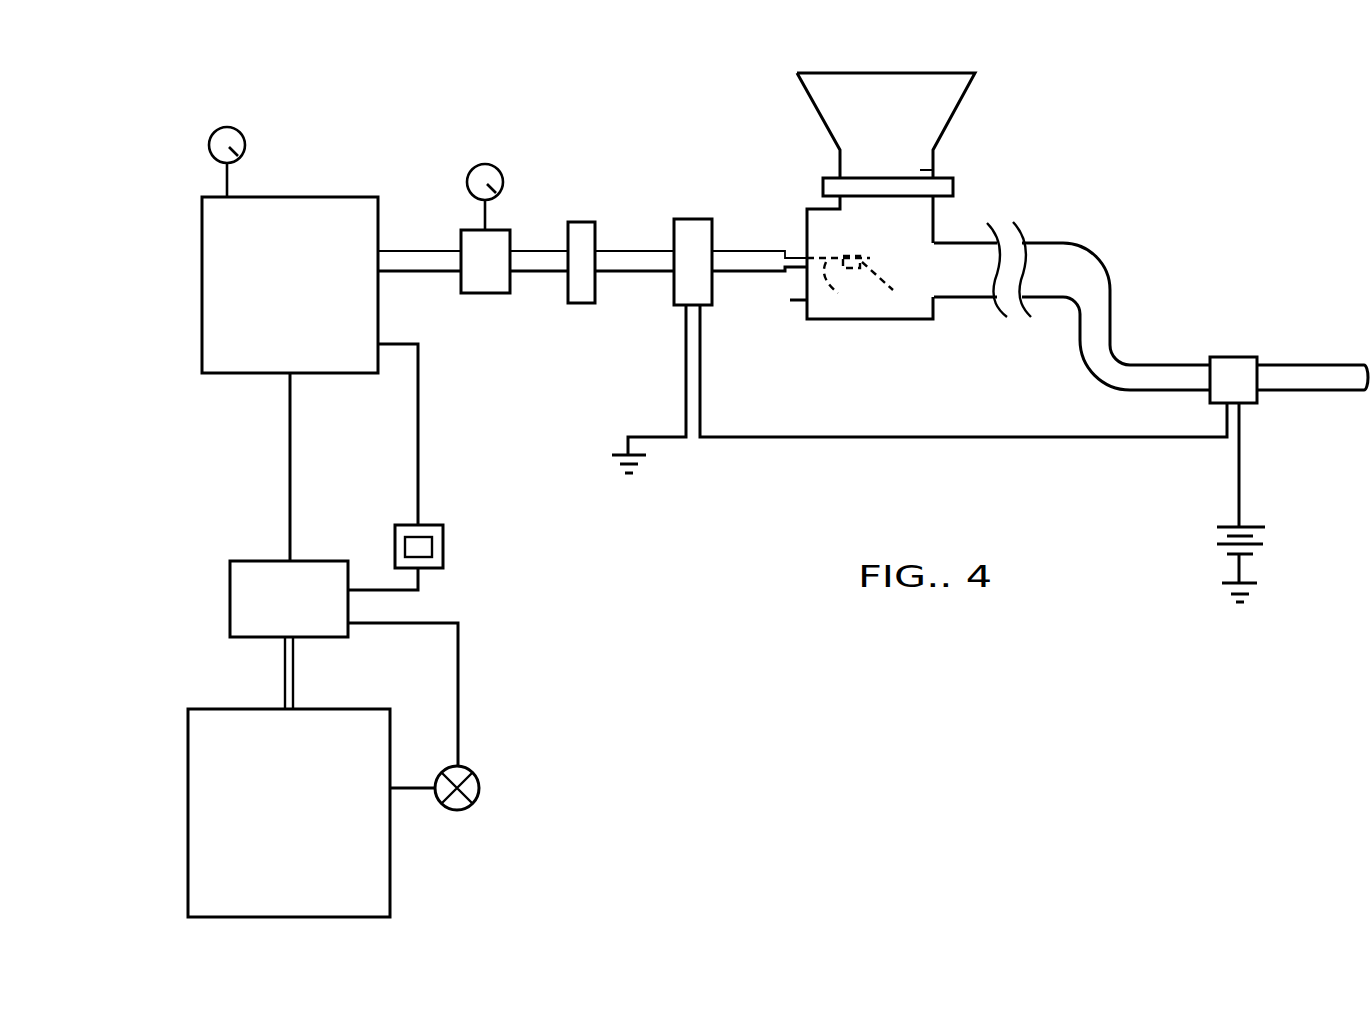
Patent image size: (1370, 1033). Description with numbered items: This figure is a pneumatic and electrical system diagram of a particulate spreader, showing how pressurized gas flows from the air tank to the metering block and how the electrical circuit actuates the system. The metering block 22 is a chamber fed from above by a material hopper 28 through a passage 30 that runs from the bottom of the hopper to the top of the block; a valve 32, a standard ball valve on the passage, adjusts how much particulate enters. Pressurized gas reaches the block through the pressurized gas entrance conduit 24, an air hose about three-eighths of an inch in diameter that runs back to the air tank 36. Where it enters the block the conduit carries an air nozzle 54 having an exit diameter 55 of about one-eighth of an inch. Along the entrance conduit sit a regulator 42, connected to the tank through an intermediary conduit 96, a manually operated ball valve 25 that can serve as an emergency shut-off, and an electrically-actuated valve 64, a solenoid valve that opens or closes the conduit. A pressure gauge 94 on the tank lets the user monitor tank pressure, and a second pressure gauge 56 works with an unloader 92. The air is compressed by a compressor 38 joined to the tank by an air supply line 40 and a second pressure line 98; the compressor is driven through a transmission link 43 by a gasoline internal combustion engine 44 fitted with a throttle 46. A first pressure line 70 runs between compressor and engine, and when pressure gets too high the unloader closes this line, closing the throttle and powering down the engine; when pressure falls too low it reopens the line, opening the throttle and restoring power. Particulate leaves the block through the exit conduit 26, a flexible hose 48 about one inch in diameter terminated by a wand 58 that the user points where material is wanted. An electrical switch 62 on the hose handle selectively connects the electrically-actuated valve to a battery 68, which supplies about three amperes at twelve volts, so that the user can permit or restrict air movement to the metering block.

The metering block 22 is at (808, 302).
The pressurized gas entrance conduit 24 is at (726, 257).
The ball valve 25 is at (580, 232).
The exit conduit 26 is at (963, 262).
The material hopper 28 is at (820, 92).
The passage 30 is at (925, 165).
The valve 32 is at (826, 187).
The air tank 36 is at (203, 302).
The compressor 38 is at (235, 609).
The air supply line 40 is at (290, 462).
The regulator 42 is at (489, 286).
The transmission link 43 is at (288, 675).
The internal combustion engine 44 is at (205, 837).
The throttle 46 is at (479, 786).
The flexible hose 48 is at (1086, 265).
The air nozzle 54 is at (866, 284).
The exit diameter 55 is at (845, 292).
The pressure gauge 56 is at (487, 163).
The wand 58 is at (1310, 365).
The electrical switch 62 is at (1237, 357).
The electrically-actuated valve 64 is at (692, 233).
The battery 68 is at (1263, 546).
The first pressure line 70 is at (459, 692).
The unloader 92 is at (444, 547).
The pressure gauge 94 is at (218, 124).
The intermediary conduit 96 is at (422, 258).
The second pressure line 98 is at (418, 432).